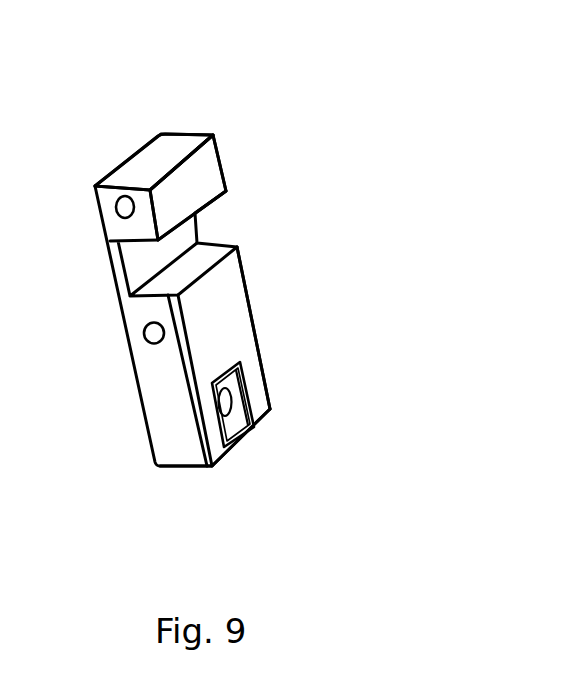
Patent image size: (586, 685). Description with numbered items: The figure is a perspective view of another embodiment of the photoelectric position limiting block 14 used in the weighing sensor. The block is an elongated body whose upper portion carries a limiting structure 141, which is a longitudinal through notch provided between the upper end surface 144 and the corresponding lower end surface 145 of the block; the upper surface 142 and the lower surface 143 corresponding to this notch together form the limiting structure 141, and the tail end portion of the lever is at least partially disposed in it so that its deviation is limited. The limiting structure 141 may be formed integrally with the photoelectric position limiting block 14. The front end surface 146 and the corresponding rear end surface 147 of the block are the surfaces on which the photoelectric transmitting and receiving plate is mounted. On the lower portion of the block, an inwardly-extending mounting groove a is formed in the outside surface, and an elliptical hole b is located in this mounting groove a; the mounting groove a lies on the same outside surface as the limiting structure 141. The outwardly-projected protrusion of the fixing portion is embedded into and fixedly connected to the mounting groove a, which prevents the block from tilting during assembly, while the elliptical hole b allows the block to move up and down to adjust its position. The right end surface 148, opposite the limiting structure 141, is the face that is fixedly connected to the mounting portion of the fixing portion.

The photoelectric position limiting block 14 is at (465, 48).
The limiting structure 141 is at (215, 230).
The upper surface 142 is at (193, 215).
The lower surface 143 is at (202, 278).
The upper end surface 144 is at (153, 155).
The lower end surface 145 is at (182, 470).
The front end surface 146 is at (155, 380).
The rear end surface 147 is at (257, 330).
The right end surface 148 is at (208, 352).
The mounting groove a is at (254, 406).
The elliptical hole b is at (235, 432).